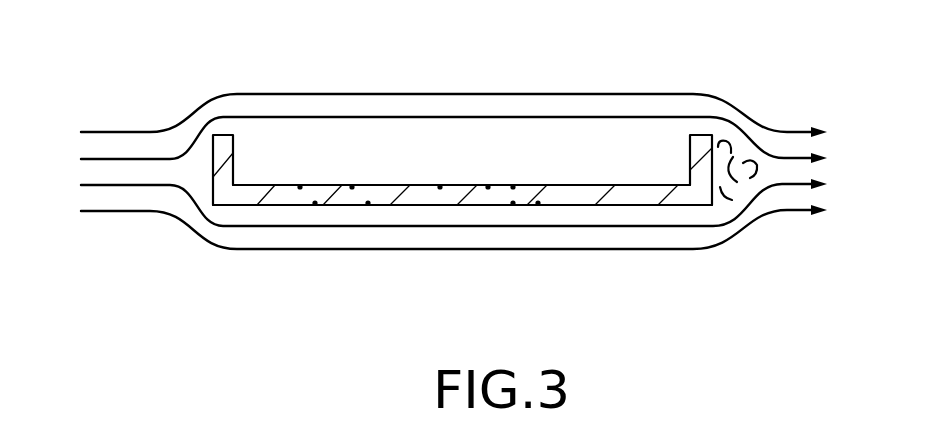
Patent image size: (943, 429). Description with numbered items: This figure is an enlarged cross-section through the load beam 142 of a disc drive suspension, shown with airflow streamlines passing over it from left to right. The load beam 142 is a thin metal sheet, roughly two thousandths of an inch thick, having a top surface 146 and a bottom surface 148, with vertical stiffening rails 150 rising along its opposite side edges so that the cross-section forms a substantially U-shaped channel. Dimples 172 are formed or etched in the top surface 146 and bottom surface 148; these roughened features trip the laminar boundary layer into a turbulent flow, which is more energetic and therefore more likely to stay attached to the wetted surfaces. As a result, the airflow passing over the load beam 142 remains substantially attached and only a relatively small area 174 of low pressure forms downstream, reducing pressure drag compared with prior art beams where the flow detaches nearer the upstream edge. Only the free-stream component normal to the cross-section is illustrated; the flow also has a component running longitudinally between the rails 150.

The load beam 142 is at (236, 305).
The top surface 146 is at (429, 186).
The bottom surface 148 is at (635, 203).
The vertical stiffening rails 150 is at (233, 157).
The dimples 172 is at (488, 186).
The area of low pressure 174 is at (748, 188).